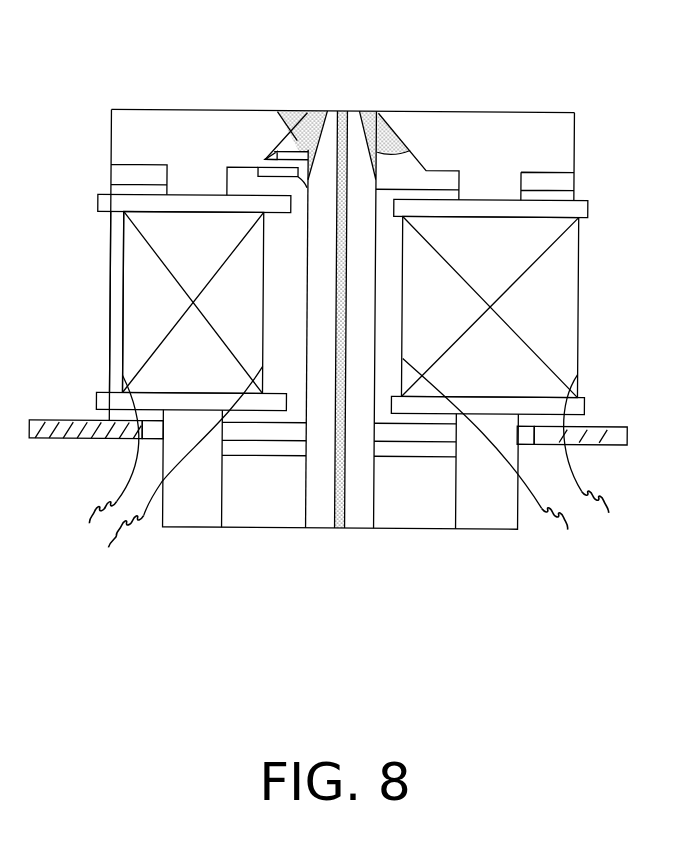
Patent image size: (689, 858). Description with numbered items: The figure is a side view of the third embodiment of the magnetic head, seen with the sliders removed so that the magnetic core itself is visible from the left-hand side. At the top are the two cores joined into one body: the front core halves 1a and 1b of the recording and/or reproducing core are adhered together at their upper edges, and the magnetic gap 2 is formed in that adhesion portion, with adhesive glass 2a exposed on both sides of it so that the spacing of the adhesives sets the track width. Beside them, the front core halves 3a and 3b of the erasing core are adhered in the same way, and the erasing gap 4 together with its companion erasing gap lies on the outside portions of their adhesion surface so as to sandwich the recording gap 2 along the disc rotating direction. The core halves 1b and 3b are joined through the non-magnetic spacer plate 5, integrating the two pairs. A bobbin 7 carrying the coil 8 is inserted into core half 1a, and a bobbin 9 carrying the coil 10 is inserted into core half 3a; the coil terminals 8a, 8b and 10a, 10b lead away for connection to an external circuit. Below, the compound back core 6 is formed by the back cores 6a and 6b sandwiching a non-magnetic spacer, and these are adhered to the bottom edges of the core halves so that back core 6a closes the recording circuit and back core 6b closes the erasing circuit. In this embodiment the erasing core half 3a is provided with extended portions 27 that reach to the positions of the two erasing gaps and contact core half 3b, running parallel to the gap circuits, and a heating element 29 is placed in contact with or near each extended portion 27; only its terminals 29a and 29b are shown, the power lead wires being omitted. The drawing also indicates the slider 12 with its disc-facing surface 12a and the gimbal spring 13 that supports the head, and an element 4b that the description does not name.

The front core half 1a is at (574, 110).
The front core half 1b is at (353, 110).
The magnetic gap 2 is at (377, 111).
The adhesive glass 2a is at (392, 140).
The front core half 3a is at (126, 110).
The front core half 3b is at (332, 110).
The magnetic gap for erasing 4 is at (310, 110).
The magnet chamfered portion 4b is at (282, 112).
The spacer plate 5 is at (343, 110).
The compound back core 6 is at (240, 530).
The back core 6a is at (408, 526).
The back core 6b is at (270, 518).
The bobbin 7 is at (588, 208).
The coil 8 is at (579, 285).
The terminal 8a is at (602, 508).
The terminal 8b is at (569, 533).
The bobbin 9 is at (97, 204).
The coil 10 is at (132, 314).
The terminal 10a is at (92, 537).
The terminal 10b is at (122, 553).
The slider 12 is at (110, 256).
The facing surface 12a is at (495, 110).
The gimbal spring 13 is at (47, 421).
The extended portion 27 is at (265, 157).
The heating element 29 is at (263, 163).
The terminal 29a is at (258, 169).
The terminal 29b is at (300, 182).